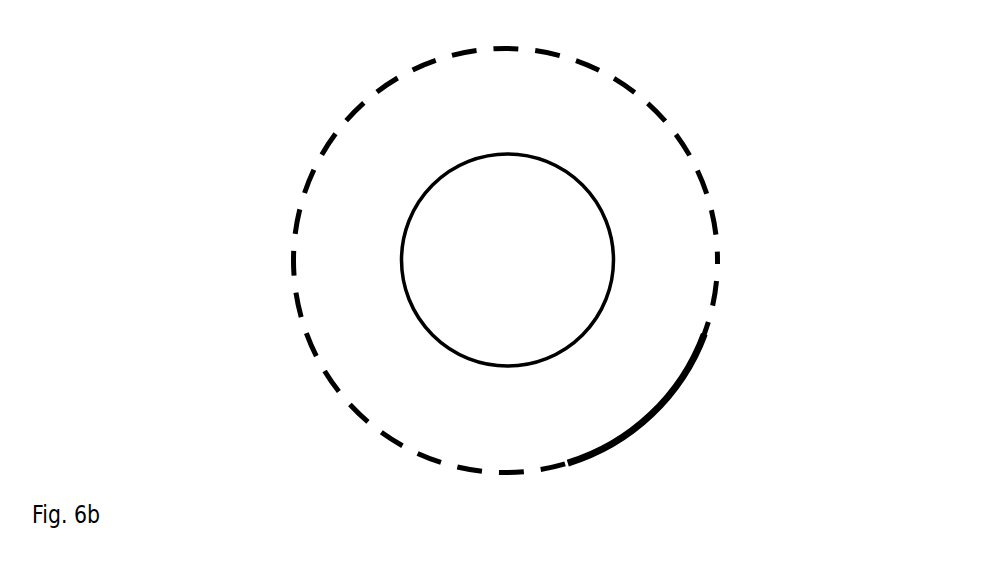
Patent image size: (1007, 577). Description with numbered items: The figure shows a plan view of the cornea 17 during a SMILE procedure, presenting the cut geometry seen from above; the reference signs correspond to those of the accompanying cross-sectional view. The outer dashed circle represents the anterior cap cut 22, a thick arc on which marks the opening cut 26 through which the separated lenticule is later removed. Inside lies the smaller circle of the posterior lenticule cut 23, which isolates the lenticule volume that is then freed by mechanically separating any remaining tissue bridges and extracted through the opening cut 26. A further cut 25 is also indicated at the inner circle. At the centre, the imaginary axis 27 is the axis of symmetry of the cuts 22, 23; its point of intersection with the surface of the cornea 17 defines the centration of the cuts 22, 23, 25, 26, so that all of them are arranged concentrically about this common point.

The cornea 17 is at (220, 240).
The anterior cap cut 22 is at (671, 126).
The posterior lenticule cut 23 is at (442, 292).
The cut 25 is at (612, 233).
The opening cut 26 is at (690, 372).
The axis 27 is at (510, 258).